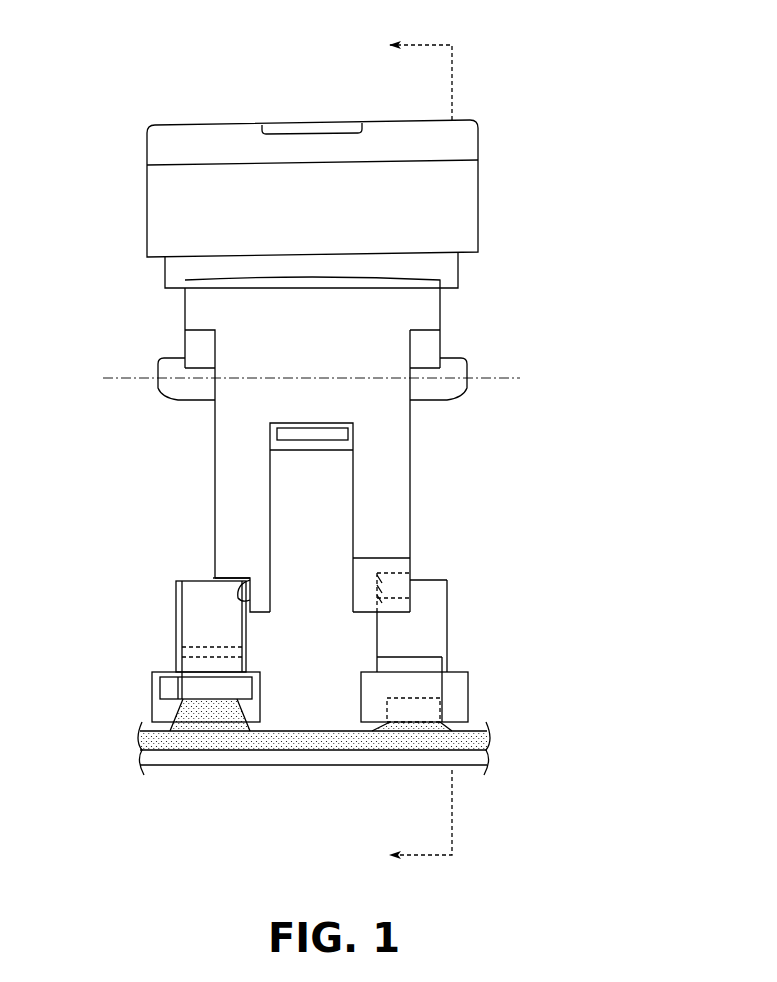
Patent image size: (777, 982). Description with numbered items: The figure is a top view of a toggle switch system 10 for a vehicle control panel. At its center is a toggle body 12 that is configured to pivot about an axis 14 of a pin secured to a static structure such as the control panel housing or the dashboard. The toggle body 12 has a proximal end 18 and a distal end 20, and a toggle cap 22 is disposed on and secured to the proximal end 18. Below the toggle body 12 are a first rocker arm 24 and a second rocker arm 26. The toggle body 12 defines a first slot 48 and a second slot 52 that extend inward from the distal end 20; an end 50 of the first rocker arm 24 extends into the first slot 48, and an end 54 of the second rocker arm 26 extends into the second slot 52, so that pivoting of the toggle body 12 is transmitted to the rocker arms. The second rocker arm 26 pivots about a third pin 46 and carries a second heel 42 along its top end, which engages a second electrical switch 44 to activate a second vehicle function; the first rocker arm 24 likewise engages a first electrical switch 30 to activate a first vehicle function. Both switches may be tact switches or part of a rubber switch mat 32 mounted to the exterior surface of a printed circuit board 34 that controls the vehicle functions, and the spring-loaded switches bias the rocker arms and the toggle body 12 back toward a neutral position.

The toggle switch system 10 is at (160, 70).
The toggle body 12 is at (414, 418).
The axis 14 is at (132, 378).
The proximal end 18 is at (458, 278).
The distal end 20 is at (272, 530).
The toggle cap 22 is at (478, 163).
The first rocker arm 24 is at (451, 637).
The second rocker arm 26 is at (174, 600).
The first electrical switch 30 is at (487, 752).
The rubber switch mat 32 is at (491, 741).
The printed circuit board 34 is at (195, 760).
The second heel 42 is at (172, 685).
The second electrical switch 44 is at (236, 713).
The third pin 46 is at (223, 645).
The first slot 48 is at (377, 592).
The end of the first rocker arm 50 is at (449, 608).
The second slot 52 is at (238, 580).
The end of the second rocker arm 54 is at (197, 583).